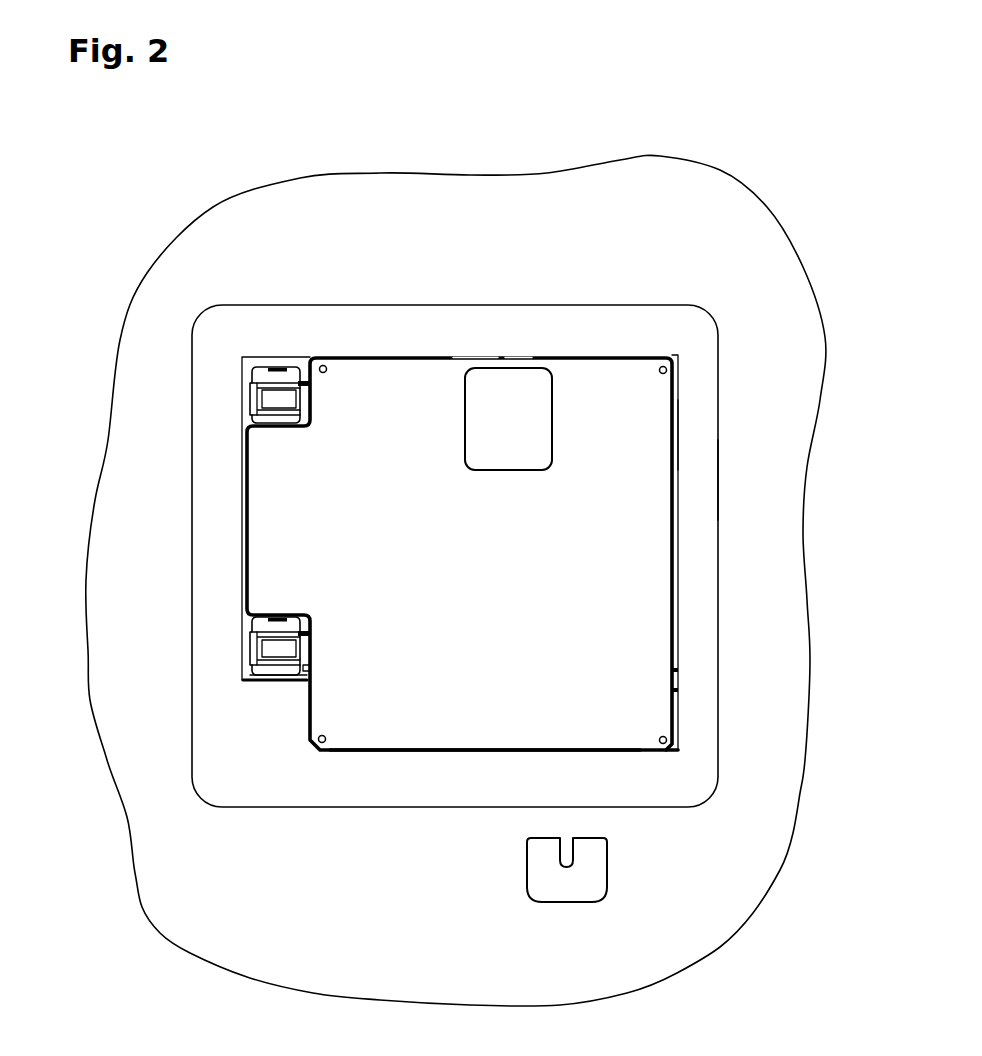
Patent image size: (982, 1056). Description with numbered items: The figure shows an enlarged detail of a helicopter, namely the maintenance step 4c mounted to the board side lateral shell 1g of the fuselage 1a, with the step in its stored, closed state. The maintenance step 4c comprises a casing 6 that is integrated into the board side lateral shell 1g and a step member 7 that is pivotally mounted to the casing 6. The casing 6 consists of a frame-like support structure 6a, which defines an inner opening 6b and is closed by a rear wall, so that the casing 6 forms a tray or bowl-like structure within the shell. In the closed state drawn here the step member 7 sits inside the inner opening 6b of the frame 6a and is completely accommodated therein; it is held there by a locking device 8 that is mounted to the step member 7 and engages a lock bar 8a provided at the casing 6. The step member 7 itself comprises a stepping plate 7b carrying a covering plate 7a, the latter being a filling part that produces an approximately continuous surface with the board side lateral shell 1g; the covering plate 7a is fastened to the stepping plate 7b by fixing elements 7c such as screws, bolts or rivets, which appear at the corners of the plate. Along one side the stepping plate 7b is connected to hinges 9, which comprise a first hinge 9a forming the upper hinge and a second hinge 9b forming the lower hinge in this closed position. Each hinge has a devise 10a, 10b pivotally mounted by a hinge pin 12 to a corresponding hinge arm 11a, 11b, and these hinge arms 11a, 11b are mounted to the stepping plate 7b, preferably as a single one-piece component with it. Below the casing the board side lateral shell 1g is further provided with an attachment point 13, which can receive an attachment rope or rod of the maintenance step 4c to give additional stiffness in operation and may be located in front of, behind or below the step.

The fuselage 1a is at (687, 203).
The board side lateral shell 1g is at (288, 232).
The maintenance step 4c is at (471, 264).
The casing 6 is at (636, 320).
The frame-like support structure 6a is at (732, 477).
The inner opening 6b is at (664, 442).
The step member 7 is at (601, 539).
The covering plate 7a is at (440, 722).
The stepping plate 7b is at (687, 571).
The fixing elements 7c is at (323, 365).
The locking device 8 is at (521, 385).
The lock bar 8a is at (503, 356).
The hinges 9 is at (231, 353).
The first hinge 9a is at (234, 399).
The second hinge 9b is at (235, 648).
The devise 10a is at (292, 370).
The devise 10b is at (277, 667).
The hinge arm 11a is at (273, 400).
The hinge arm 11b is at (277, 650).
The hinge pins 12 is at (275, 352).
The attachment point 13 is at (569, 832).